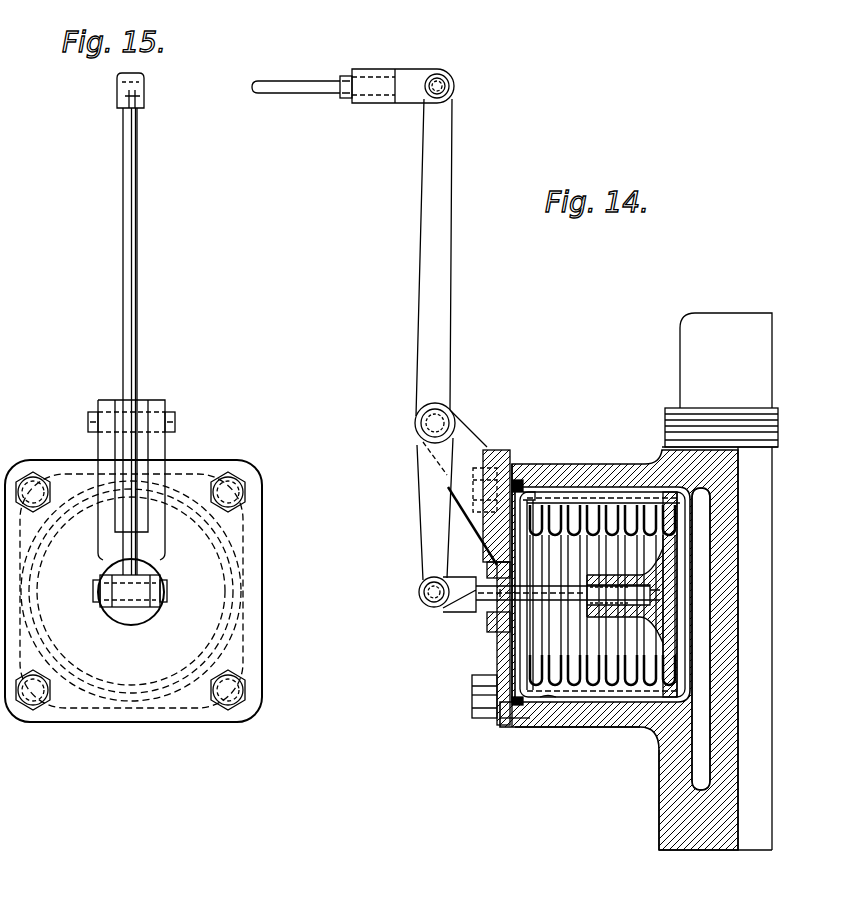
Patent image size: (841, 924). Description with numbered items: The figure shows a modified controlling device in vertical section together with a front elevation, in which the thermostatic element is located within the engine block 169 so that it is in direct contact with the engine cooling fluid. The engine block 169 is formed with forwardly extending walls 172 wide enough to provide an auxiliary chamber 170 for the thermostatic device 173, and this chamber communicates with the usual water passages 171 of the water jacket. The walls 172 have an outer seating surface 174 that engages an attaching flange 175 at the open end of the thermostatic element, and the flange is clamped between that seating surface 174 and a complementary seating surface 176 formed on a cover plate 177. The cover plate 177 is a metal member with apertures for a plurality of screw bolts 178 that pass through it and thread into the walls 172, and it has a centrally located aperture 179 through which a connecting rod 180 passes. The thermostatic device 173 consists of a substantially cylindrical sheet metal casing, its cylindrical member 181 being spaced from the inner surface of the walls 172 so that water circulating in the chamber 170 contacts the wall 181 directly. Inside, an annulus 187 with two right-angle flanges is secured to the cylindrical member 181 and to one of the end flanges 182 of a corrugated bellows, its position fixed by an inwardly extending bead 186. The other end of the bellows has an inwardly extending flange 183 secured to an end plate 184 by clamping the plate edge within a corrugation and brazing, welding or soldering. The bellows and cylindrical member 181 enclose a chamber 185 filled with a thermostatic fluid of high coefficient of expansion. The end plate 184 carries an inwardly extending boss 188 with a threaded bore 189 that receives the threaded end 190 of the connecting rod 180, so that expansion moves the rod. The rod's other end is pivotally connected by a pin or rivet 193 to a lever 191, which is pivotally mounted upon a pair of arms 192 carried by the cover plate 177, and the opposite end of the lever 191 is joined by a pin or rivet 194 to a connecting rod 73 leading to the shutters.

In FIG. 14, the connecting rod 73 is at (281, 88).
In FIG. 14, the engine block 169 is at (717, 322).
In FIG. 14, the auxiliary chamber 170 is at (601, 490).
In FIG. 14, the water passages 171 is at (695, 487).
In FIG. 15, the forwardly extending walls 172 is at (258, 566).
In FIG. 14, the forwardly extending walls 172 is at (572, 462).
In FIG. 14, the thermostatic device 173 is at (565, 500).
In FIG. 14, the outer seating surface 174 is at (530, 728).
In FIG. 14, the attaching flange 175 is at (515, 720).
In FIG. 14, the complementary seating surface 176 is at (484, 698).
In FIG. 14, the cover plate 177 is at (500, 652).
In FIG. 15, the screw bolts 178 is at (240, 493).
In FIG. 14, the screw bolts 178 is at (478, 715).
In FIG. 14, the centrally located aperture 179 is at (487, 570).
In FIG. 15, the connecting rod 180 is at (120, 618).
In FIG. 14, the connecting rod 180 is at (452, 598).
In FIG. 14, the cylindrical member 181 is at (622, 482).
In FIG. 14, the end flange of the bellows 182 is at (518, 512).
In FIG. 14, the inwardly extending flange 183 is at (742, 488).
In FIG. 14, the end plate 184 is at (658, 588).
In FIG. 14, the chamber 185 is at (590, 492).
In FIG. 14, the inwardly extending bead 186 is at (550, 703).
In FIG. 14, the annulus 187 is at (530, 492).
In FIG. 14, the inwardly extending boss 188 is at (641, 728).
In FIG. 14, the threaded bore 189 is at (647, 680).
In FIG. 14, the threaded end 190 is at (658, 603).
In FIG. 15, the lever 191 is at (130, 315).
In FIG. 14, the lever 191 is at (427, 338).
In FIG. 15, the pair of arms 192 is at (160, 452).
In FIG. 14, the pair of arms 192 is at (463, 422).
In FIG. 15, the pin or rivet 193 is at (165, 603).
In FIG. 14, the pin or rivet 193 is at (420, 592).
In FIG. 14, the pin or rivet 194 is at (433, 80).